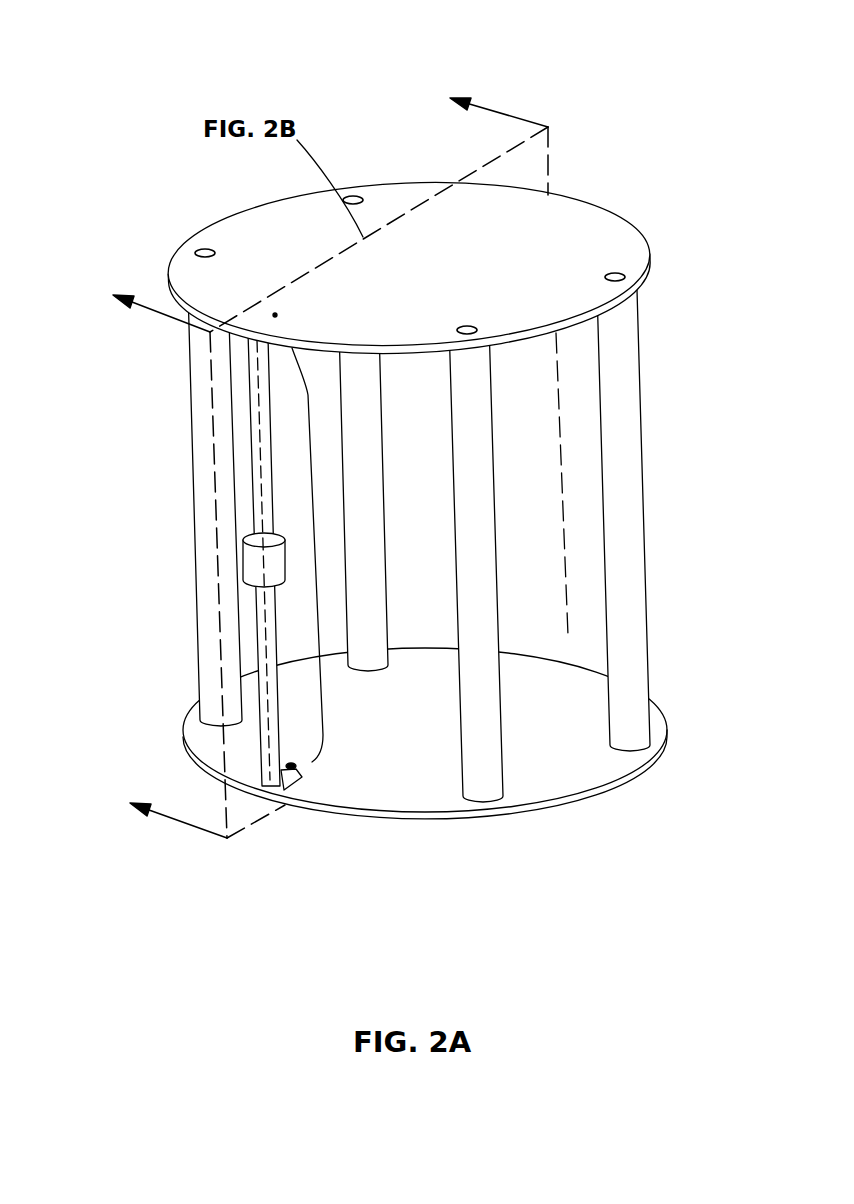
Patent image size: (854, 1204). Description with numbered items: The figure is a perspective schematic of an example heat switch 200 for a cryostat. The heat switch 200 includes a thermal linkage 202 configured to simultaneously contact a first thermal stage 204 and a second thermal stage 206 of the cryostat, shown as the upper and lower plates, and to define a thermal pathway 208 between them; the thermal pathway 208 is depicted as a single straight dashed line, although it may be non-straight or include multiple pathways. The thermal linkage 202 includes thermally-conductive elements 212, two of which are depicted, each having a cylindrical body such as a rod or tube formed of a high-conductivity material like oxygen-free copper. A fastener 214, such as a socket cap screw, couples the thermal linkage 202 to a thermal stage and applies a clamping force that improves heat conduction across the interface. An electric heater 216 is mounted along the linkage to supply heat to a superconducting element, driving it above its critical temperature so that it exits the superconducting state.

The heat switch 200 is at (682, 72).
The thermal linkage 202 is at (318, 555).
The first thermal stage 204 is at (642, 233).
The second thermal stage 206 is at (667, 730).
The thermal pathway 208 is at (267, 652).
The thermally-conductive element 212 is at (247, 435).
The fastener 214 is at (300, 771).
The electric heater 216 is at (243, 536).